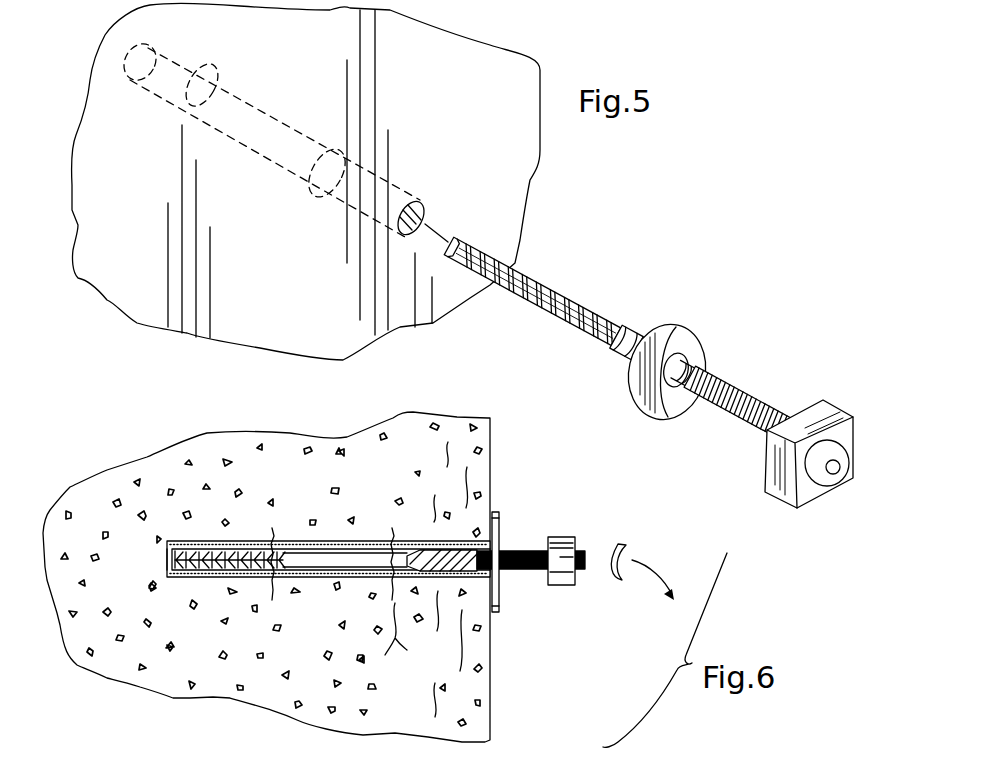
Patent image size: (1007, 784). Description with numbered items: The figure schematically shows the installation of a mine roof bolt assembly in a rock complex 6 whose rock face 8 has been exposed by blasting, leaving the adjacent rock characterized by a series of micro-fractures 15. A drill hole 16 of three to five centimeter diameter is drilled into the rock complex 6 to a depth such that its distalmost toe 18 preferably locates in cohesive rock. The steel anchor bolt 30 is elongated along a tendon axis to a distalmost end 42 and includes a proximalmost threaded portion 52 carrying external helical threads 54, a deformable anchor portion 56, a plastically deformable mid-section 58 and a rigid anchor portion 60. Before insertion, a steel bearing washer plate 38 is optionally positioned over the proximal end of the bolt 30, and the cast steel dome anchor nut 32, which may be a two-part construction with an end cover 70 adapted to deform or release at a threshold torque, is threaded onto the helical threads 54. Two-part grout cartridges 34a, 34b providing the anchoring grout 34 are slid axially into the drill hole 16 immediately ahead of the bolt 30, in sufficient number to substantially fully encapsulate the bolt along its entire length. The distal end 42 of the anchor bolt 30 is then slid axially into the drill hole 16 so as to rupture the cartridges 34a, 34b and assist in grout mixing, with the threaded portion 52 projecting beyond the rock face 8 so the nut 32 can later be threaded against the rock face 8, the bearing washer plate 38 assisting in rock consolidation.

In FIG. 6, the rock complex 6 is at (399, 711).
In FIG. 5, the rock face 8 is at (408, 94).
In FIG. 6, the rock face 8 is at (407, 459).
In FIG. 6, the micro-fractures 15 is at (407, 650).
In FIG. 5, the drill hole 16 is at (270, 145).
In FIG. 6, the drill hole 16 is at (363, 544).
In FIG. 6, the toe 18 is at (167, 556).
In FIG. 5, the anchor bolt 30 is at (640, 291).
In FIG. 5, the anchor nut 32 is at (774, 501).
In FIG. 6, the anchor nut 32 is at (565, 537).
In FIG. 6, the anchoring grout 34 is at (283, 541).
In FIG. 5, the grout cartridge 34a is at (192, 70).
In FIG. 5, the grout cartridge 34b is at (323, 210).
In FIG. 5, the bearing washer plate 38 is at (628, 383).
In FIG. 6, the bearing washer plate 38 is at (499, 593).
In FIG. 5, the distalmost end 42 is at (452, 235).
In FIG. 5, the threaded portion 52 is at (753, 402).
In FIG. 6, the helical threads 54 is at (518, 549).
In FIG. 5, the deformable anchor portion 56 is at (690, 358).
In FIG. 5, the plastically deformable mid-section 58 is at (612, 337).
In FIG. 6, the plastically deformable mid-section 58 is at (316, 578).
In FIG. 5, the rigid anchor portion 60 is at (451, 240).
In FIG. 5, the end cover 70 is at (836, 474).
In FIG. 6, the end cover 70 is at (620, 578).